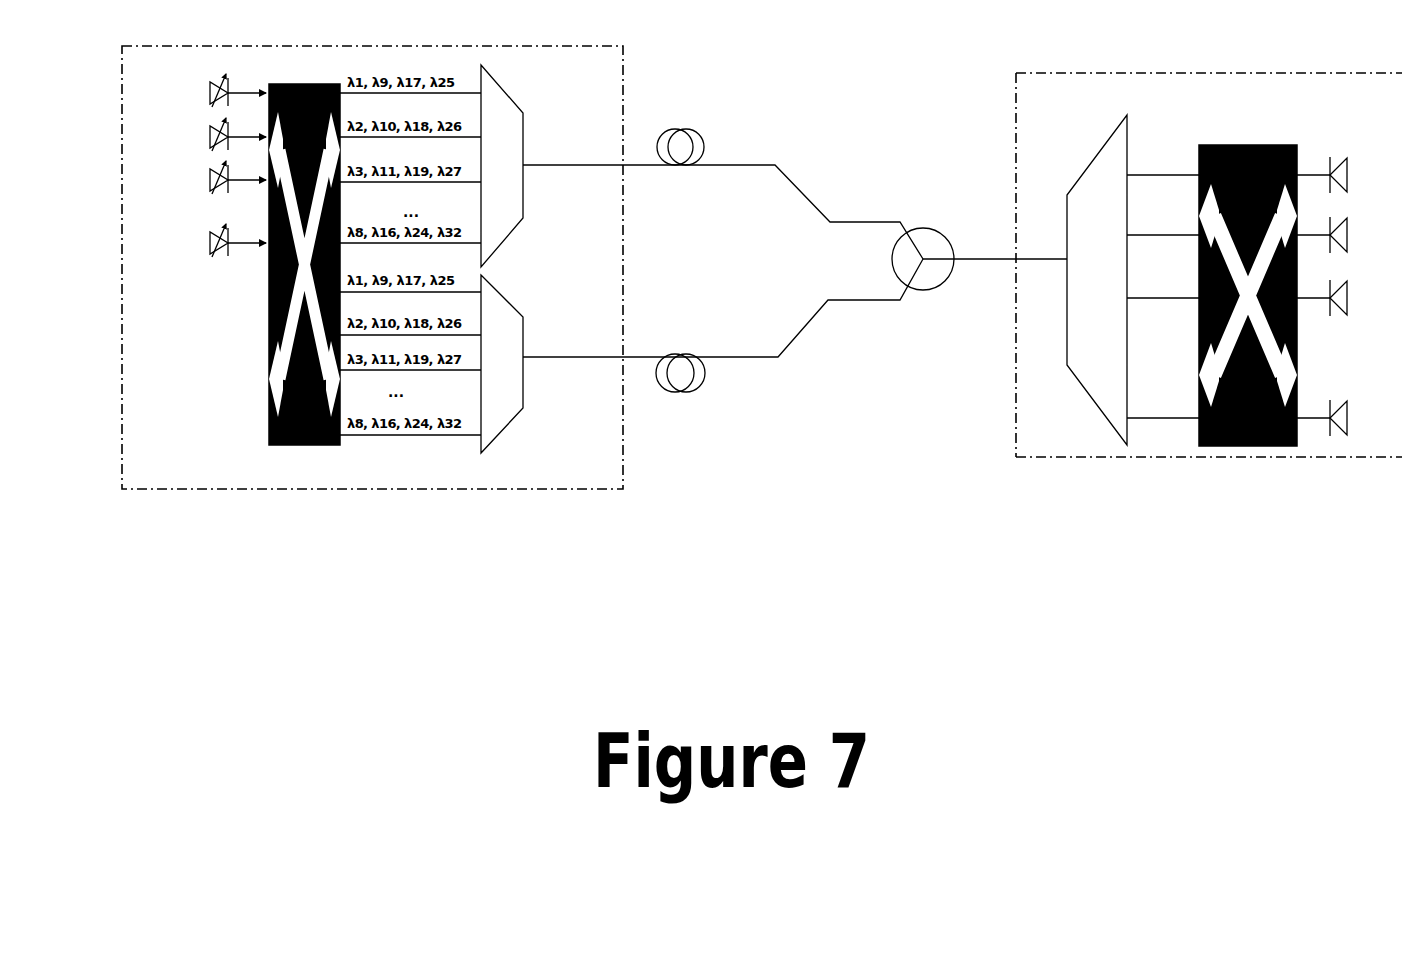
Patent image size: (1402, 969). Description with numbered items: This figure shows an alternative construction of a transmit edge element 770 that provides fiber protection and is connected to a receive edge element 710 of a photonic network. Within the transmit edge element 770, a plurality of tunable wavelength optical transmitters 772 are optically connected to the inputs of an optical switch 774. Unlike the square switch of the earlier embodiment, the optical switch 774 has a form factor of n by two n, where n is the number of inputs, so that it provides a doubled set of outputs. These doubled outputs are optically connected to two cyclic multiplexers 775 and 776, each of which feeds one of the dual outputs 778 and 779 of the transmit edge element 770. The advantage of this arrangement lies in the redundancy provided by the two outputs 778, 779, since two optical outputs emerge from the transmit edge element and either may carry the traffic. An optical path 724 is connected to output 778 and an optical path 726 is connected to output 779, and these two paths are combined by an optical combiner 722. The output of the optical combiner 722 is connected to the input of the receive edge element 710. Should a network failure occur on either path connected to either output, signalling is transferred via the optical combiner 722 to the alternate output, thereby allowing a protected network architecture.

The transmit edge element 770 is at (167, 41).
The tunable wavelength optical transmitters 772 is at (203, 240).
The optical switch 774 is at (311, 84).
The cyclic multiplexer 775 is at (497, 84).
The cyclic multiplexer 776 is at (497, 292).
The output 778 is at (523, 168).
The output 779 is at (523, 360).
The optical path 724 is at (805, 195).
The optical path 726 is at (809, 322).
The optical combiner 722 is at (932, 228).
The receive edge element 710 is at (1063, 63).